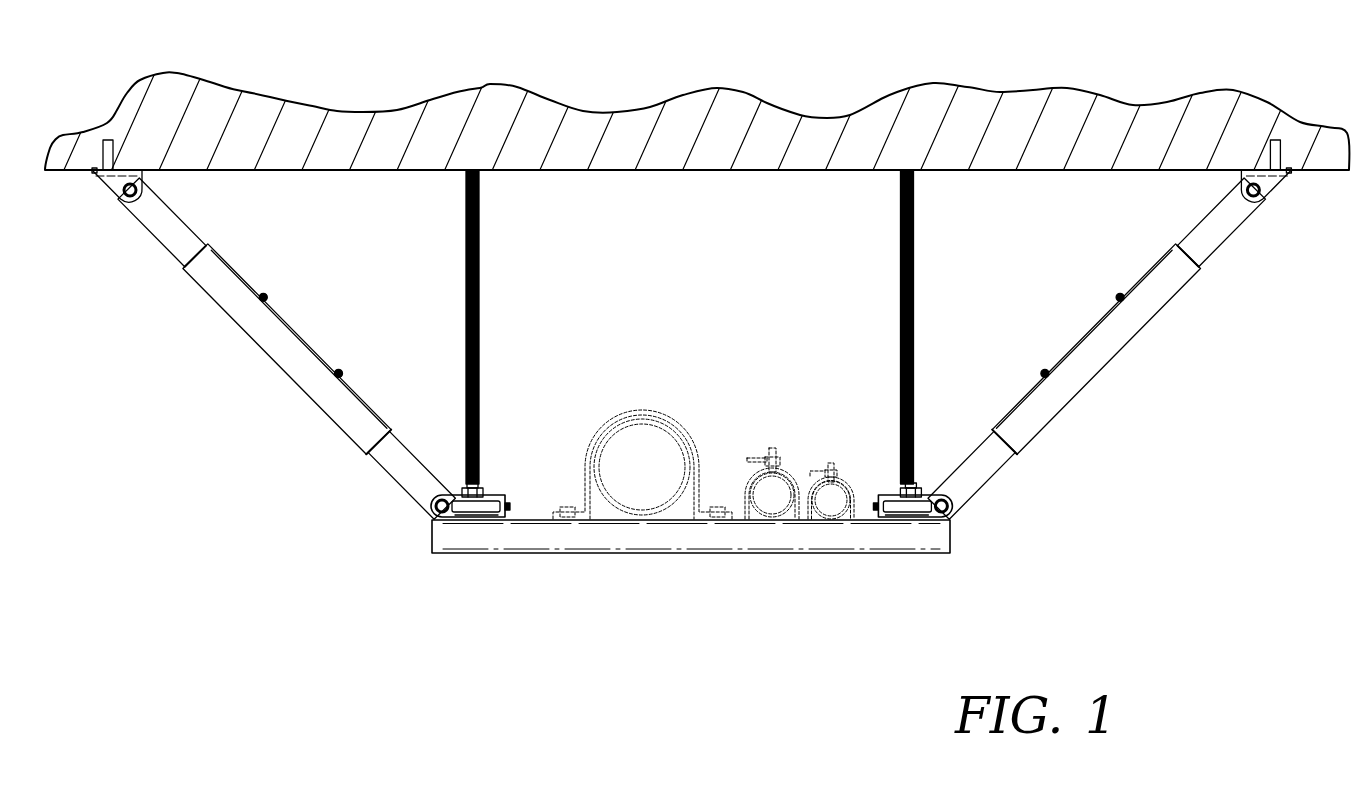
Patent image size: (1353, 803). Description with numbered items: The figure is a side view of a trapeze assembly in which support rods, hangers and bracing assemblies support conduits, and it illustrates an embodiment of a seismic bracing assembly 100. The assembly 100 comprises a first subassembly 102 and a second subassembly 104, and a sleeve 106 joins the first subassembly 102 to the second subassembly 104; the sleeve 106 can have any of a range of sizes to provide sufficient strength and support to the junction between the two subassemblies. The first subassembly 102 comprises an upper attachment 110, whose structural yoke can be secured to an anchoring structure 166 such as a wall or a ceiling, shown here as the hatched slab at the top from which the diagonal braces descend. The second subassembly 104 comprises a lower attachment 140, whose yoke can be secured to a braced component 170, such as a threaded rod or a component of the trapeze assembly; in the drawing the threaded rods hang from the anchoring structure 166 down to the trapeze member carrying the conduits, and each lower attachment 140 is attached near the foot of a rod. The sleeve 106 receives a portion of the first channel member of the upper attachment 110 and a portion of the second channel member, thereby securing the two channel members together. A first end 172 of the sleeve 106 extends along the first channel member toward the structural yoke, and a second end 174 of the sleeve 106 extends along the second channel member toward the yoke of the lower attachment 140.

The seismic bracing assembly 100 is at (350, 212).
The first subassembly 102 is at (193, 203).
The second subassembly 104 is at (428, 458).
The sleeve 106 is at (299, 312).
The upper attachment 110 is at (679, 348).
The lower attachment 140 is at (378, 493).
The anchoring structure 166 is at (49, 160).
The braced component 170 is at (482, 243).
The first end of the sleeve 172 is at (202, 262).
The second end of the sleeve 174 is at (380, 437).